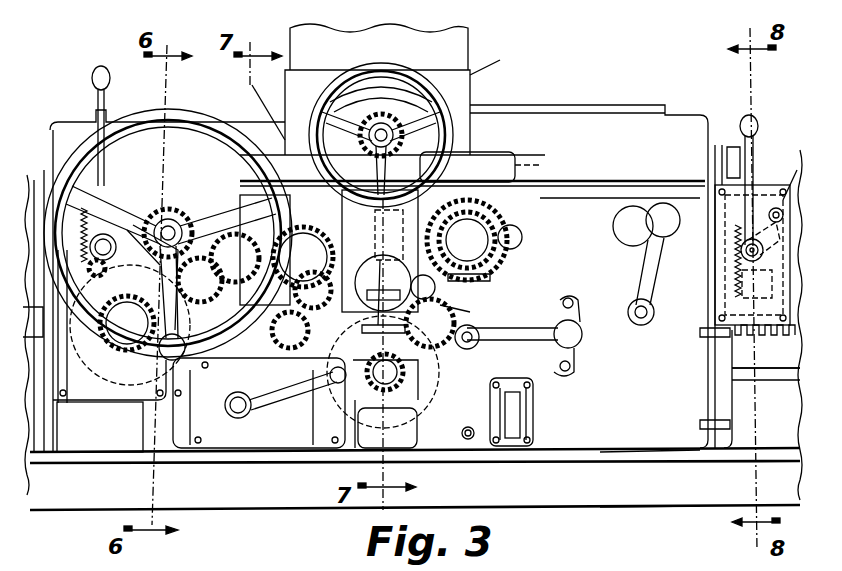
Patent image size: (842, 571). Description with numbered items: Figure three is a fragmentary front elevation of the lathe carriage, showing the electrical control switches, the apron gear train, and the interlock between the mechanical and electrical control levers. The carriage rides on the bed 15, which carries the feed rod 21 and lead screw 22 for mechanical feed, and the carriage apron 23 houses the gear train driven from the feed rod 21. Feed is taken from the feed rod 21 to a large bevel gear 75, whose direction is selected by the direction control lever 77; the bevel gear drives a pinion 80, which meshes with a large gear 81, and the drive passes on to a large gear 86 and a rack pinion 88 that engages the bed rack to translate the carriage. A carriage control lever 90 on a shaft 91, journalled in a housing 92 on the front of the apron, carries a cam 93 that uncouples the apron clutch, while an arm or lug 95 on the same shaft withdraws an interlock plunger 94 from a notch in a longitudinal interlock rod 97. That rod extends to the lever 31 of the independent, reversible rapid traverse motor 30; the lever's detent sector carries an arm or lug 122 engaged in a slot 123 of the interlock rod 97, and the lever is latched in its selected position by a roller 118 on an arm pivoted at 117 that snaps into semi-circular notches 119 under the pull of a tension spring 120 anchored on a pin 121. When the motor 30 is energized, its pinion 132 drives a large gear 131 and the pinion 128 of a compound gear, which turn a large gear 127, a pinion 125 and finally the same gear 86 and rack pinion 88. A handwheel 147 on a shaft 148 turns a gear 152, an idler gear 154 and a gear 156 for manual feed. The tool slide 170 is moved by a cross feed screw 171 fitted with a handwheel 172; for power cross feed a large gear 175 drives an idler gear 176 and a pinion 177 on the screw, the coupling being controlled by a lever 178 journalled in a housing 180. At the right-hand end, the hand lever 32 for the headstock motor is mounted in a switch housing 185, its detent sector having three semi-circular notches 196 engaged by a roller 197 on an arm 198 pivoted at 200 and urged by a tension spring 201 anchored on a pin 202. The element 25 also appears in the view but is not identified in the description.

The bed 15 is at (668, 496).
The feed rod 21 is at (778, 382).
The lead screw 22 is at (790, 330).
The carriage apron 23 is at (666, 446).
The cam lever 25 is at (640, 262).
The rapid traverse motor 30 is at (100, 398).
The lever 31 is at (102, 68).
The hand lever 32 is at (758, 126).
The large bevel gear 75 is at (430, 385).
The direction control lever 77 is at (582, 342).
The pinion 80 is at (387, 401).
The large gear 81 is at (420, 345).
The large gear 86 is at (300, 340).
The pinion 88 is at (314, 290).
The carriage control lever 90 is at (436, 292).
The shaft 91 is at (460, 315).
The housing 92 is at (430, 323).
The cam 93 is at (382, 338).
The interlock plunger 94 is at (383, 260).
The arm or lug 95 is at (390, 305).
The interlock rod 97 is at (303, 241).
The pivot 117 is at (110, 312).
The roller 118 is at (100, 276).
The semi-circular notches 119 is at (70, 326).
The tension spring 120 is at (150, 200).
The pin 121 is at (60, 200).
The arm or lug 122 is at (158, 210).
The slot 123 is at (470, 212).
The pinion 125 is at (190, 290).
The large gear 127 is at (238, 392).
The pinion 128 is at (259, 403).
The large gear 131 is at (94, 396).
The pinion 132 is at (130, 325).
The handwheel 147 is at (144, 112).
The shaft 148 is at (122, 232).
The gear 152 is at (190, 200).
The idler gear 154 is at (218, 200).
The gear 156 is at (290, 324).
The tool slide 170 is at (500, 63).
The cross feed screw 171 is at (378, 118).
The handwheel 172 is at (440, 120).
The large gear 175 is at (500, 270).
The idler gear 176 is at (509, 173).
The pinion 177 is at (425, 130).
The lever 178 is at (522, 236).
The housing 180 is at (505, 262).
The switch housing 185 is at (765, 195).
The semi-circular notches 196 is at (742, 250).
The roller 197 is at (740, 245).
The arm 198 is at (772, 208).
The pivot 200 is at (790, 180).
The tension spring 201 is at (735, 270).
The pin 202 is at (718, 300).